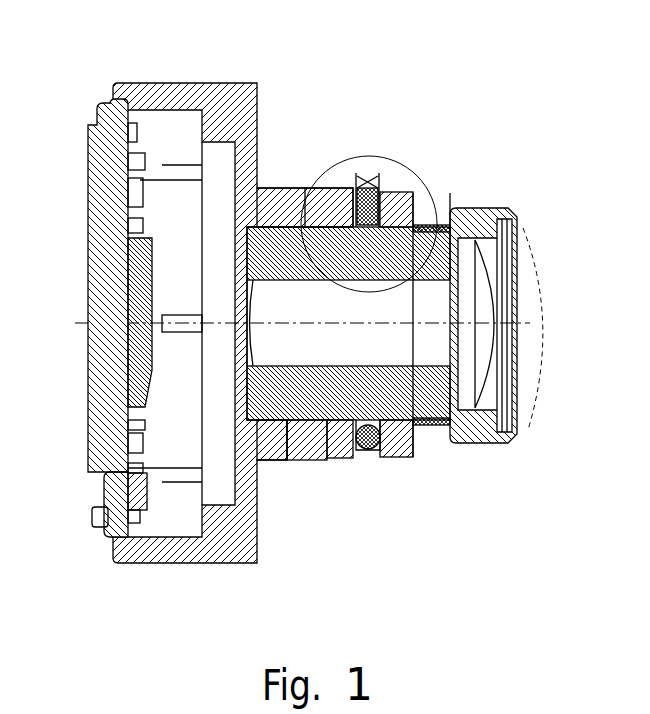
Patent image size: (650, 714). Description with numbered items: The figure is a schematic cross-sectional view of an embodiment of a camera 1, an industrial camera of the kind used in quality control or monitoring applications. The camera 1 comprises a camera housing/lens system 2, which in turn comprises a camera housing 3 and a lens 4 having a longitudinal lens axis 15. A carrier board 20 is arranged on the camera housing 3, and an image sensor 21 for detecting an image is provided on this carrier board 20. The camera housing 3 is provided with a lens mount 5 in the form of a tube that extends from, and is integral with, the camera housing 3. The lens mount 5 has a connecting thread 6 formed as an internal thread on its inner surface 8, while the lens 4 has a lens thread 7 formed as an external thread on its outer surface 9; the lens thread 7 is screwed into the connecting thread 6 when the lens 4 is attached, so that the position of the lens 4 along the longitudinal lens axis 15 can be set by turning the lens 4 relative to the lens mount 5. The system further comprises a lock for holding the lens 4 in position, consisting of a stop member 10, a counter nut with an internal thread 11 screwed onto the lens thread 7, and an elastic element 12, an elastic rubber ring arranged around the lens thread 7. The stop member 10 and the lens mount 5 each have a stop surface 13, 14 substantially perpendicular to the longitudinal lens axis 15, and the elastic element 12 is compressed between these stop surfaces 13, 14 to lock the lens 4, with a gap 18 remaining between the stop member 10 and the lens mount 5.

The camera 1 is at (441, 62).
The camera housing/lens system 2 is at (416, 346).
The camera housing 3 is at (259, 530).
The lens 4 is at (490, 208).
The lens mount 5 is at (283, 190).
The connecting thread 6 is at (322, 460).
The lens thread 7 is at (428, 443).
The inner surface 8 is at (286, 462).
The outer surface 9 is at (447, 200).
The stop member 10 is at (393, 196).
The internal thread 11 is at (445, 200).
The elastic element 12 is at (368, 452).
The stop surface 13 is at (390, 458).
The stop surface 14 is at (352, 462).
The longitudinal lens axis 15 is at (525, 326).
The gap 18 is at (367, 186).
The carrier board 20 is at (88, 188).
The image sensor 21 is at (150, 291).